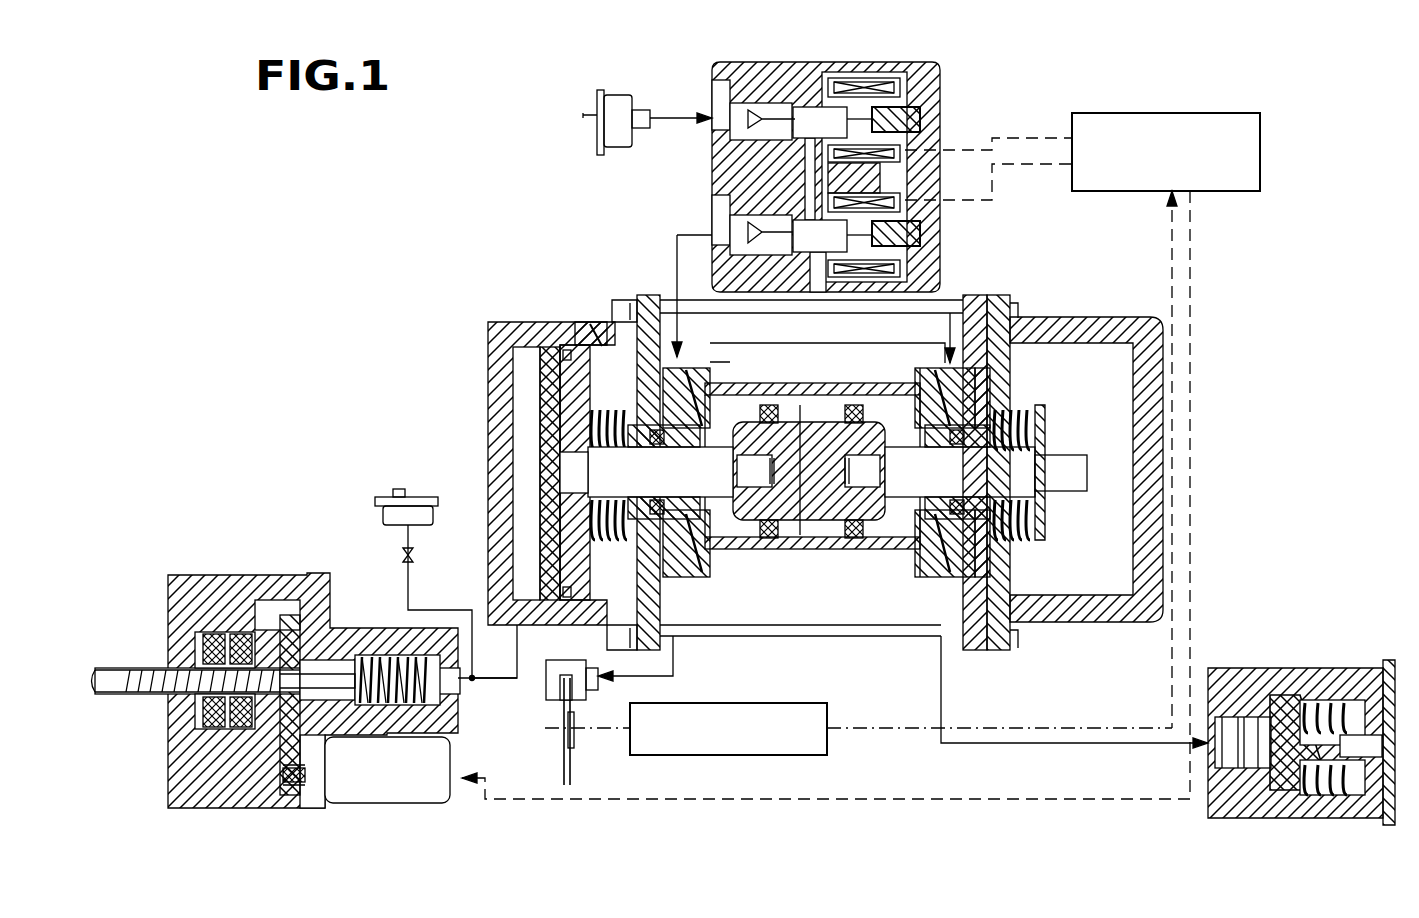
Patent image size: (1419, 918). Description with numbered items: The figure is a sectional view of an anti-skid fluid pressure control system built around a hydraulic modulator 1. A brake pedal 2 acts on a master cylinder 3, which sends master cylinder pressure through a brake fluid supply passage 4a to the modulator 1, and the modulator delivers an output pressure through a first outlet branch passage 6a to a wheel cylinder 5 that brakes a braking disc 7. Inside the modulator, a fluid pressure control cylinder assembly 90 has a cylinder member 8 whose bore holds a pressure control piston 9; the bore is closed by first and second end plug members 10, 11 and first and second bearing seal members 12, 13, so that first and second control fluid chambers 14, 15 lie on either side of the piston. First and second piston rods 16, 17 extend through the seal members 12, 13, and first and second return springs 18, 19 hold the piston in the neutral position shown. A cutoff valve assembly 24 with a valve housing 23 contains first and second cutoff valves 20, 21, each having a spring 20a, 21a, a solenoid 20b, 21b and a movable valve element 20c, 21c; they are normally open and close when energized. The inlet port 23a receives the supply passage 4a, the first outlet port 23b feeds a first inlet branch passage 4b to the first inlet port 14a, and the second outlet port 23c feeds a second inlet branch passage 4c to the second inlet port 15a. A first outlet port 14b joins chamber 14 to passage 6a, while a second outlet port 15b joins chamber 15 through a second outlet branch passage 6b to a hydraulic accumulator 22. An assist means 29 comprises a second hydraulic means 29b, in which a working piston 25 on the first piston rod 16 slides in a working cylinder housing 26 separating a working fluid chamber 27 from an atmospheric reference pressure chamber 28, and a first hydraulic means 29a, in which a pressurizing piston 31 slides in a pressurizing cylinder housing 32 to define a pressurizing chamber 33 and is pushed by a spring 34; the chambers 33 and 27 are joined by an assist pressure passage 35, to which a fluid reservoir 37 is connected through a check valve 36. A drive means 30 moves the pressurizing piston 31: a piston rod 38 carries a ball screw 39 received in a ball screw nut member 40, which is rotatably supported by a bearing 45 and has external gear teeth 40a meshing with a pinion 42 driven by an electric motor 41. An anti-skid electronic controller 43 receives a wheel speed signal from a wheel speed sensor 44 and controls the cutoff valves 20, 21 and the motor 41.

The anti-skid brake control modulator 1 is at (1205, 415).
The brake pedal 2 is at (575, 132).
The master cylinder 3 is at (643, 106).
The brake fluid supply passage 4a is at (672, 132).
The first inlet branch passage 4b is at (676, 262).
The second inlet branch passage 4c is at (900, 325).
The wheel cylinder 5 is at (590, 695).
The first brake fluid outlet branch passage 6a is at (673, 612).
The second brake fluid outlet branch passage 6b is at (941, 698).
The braking disc 7 is at (572, 773).
The cylinder member 8 is at (738, 383).
The pressure control piston 9 is at (845, 420).
The first end plug member 10 is at (690, 372).
The second end plug member 11 is at (915, 366).
The first bearing seal member 12 is at (700, 432).
The second bearing seal member 13 is at (985, 395).
The first control fluid chamber 14 is at (762, 555).
The first inlet port 14a is at (735, 385).
The first outlet port 14b is at (715, 555).
The second control fluid chamber 15 is at (885, 552).
The second inlet port 15a is at (1010, 345).
The second outlet port 15b is at (930, 562).
The first piston rod 16 is at (646, 473).
The second piston rod 17 is at (986, 472).
The first return spring 18 is at (598, 405).
The second return spring 19 is at (1010, 415).
The first cutoff valve 20 is at (1030, 112).
The spring 20a is at (922, 118).
The solenoid 20b is at (868, 78).
The movable valve element 20c is at (800, 105).
The second cutoff valve 21 is at (1022, 237).
The spring 21a is at (922, 232).
The solenoid 21b is at (920, 270).
The movable valve element 21c is at (800, 215).
The hydraulic accumulator 22 is at (1288, 668).
The valve housing 23 is at (840, 62).
The inlet port 23a is at (712, 100).
The first outlet port 23b is at (712, 232).
The second outlet port 23c is at (820, 292).
The cutoff valve assembly 24 is at (948, 78).
The working piston 25 is at (577, 350).
The working cylinder housing 26 is at (515, 322).
The working fluid chamber 27 is at (540, 386).
The reference pressure chamber 28 is at (594, 472).
The assist means 29 is at (352, 403).
The first hydraulic means 29a is at (402, 540).
The second hydraulic means 29b is at (590, 272).
The drive means 30 is at (215, 575).
The pressurizing piston 31 is at (335, 640).
The pressurizing cylinder housing 32 is at (395, 655).
The pressurizing fluid chamber 33 is at (458, 705).
The spring 34 is at (458, 745).
The assist pressure passage 35 is at (528, 650).
The check valve 36 is at (412, 555).
The fluid reservoir 37 is at (388, 497).
The piston rod 38 is at (115, 663).
The ball screw 39 is at (150, 670).
The ball screw nut member 40 is at (285, 795).
The external gear teeth 40a is at (300, 615).
The electric rotary motor 41 is at (425, 800).
The pinion 42 is at (300, 790).
The anti-skid electronic logic controller 43 is at (1158, 113).
The wheel speed sensor 44 is at (752, 703).
The bearing 45 is at (245, 806).
The fluid pressure control cylinder assembly 90 is at (835, 636).